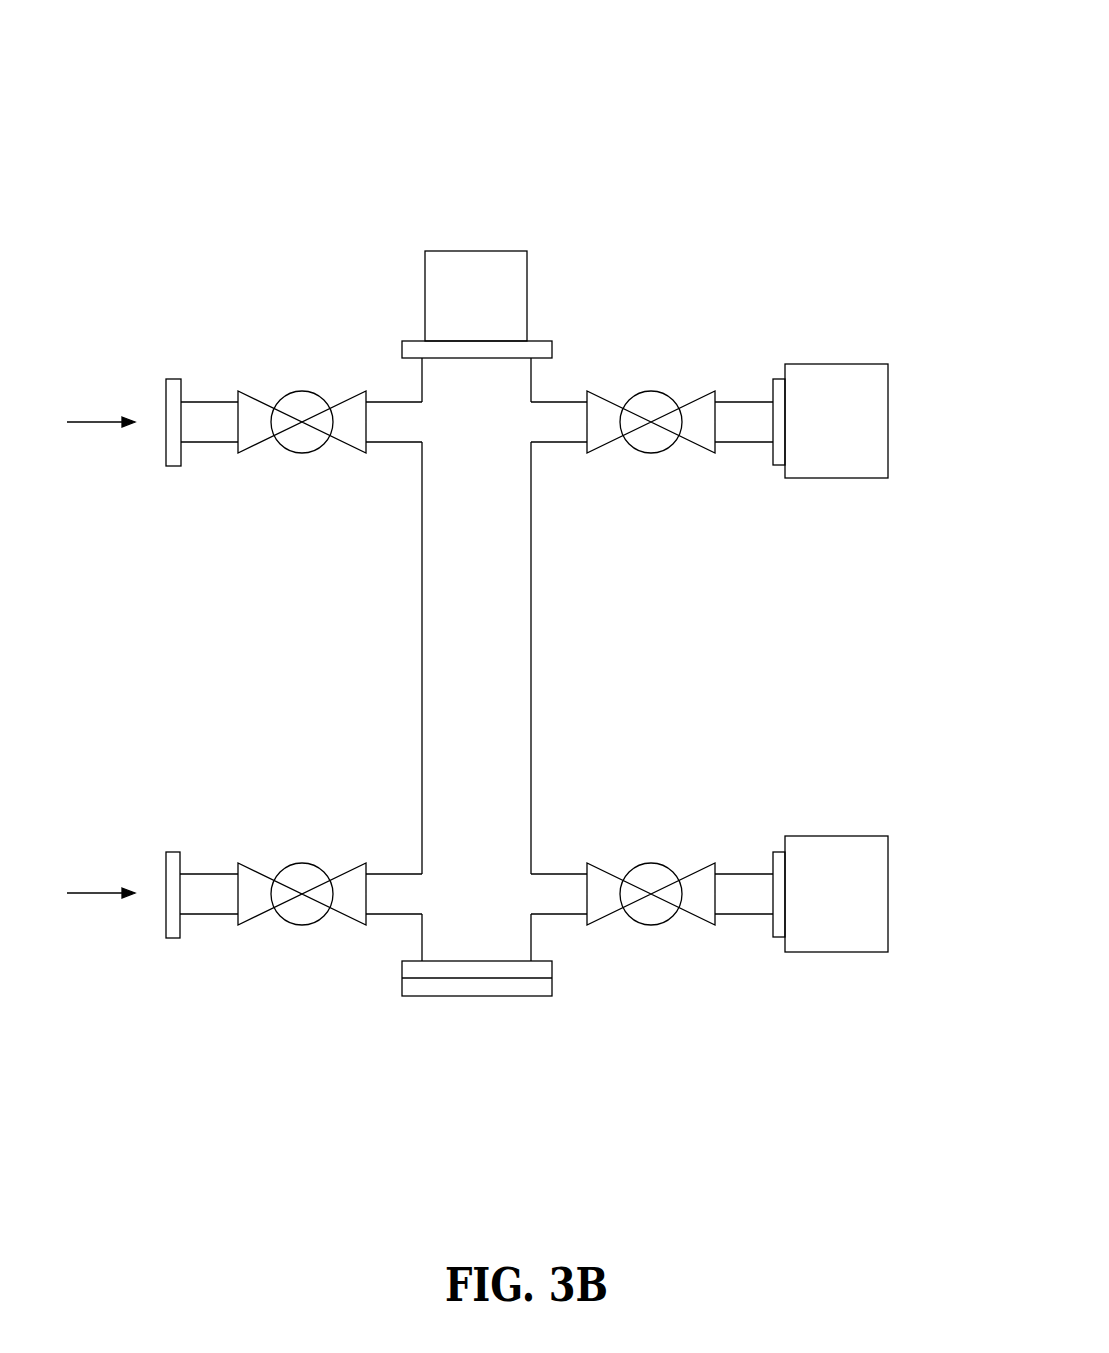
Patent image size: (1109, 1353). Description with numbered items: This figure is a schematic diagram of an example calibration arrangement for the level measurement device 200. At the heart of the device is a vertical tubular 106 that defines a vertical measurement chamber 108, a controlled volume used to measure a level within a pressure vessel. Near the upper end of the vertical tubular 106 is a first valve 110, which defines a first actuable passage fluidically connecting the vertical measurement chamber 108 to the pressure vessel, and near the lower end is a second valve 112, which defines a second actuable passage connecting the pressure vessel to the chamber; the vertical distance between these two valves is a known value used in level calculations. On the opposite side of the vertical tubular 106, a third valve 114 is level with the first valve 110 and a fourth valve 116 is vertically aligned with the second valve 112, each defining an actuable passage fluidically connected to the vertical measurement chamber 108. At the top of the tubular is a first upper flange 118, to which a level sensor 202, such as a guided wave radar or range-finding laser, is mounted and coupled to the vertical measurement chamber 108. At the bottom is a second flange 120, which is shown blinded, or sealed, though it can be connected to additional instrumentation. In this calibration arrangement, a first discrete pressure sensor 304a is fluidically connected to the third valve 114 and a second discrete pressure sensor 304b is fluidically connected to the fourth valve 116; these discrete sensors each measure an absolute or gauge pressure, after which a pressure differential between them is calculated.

The level measurement device 200 is at (833, 98).
The level sensor 202 is at (446, 258).
The first upper flange 118 is at (535, 338).
The second flange 120 is at (420, 998).
The vertical tubular 106 is at (422, 653).
The vertical measurement chamber 108 is at (500, 690).
The first valve 110 is at (302, 391).
The second valve 112 is at (303, 925).
The third valve 114 is at (651, 391).
The fourth valve 116 is at (650, 925).
The first discrete pressure sensor 304a is at (882, 415).
The second discrete pressure sensor 304b is at (882, 897).